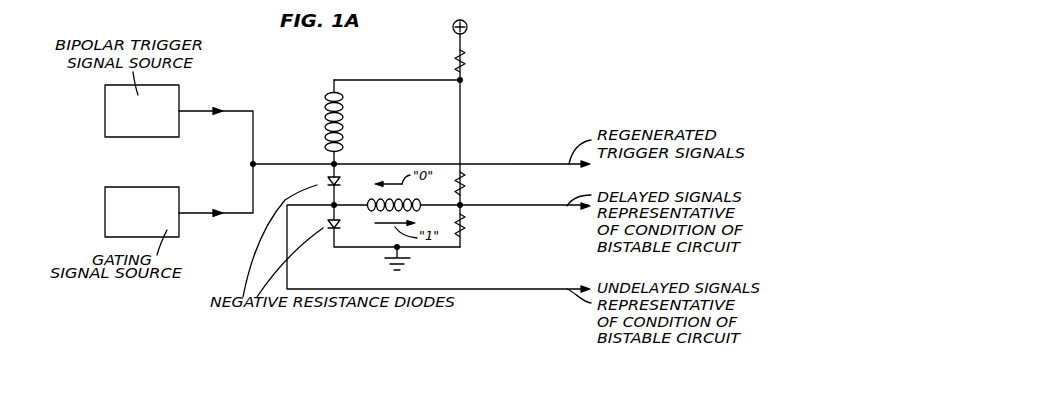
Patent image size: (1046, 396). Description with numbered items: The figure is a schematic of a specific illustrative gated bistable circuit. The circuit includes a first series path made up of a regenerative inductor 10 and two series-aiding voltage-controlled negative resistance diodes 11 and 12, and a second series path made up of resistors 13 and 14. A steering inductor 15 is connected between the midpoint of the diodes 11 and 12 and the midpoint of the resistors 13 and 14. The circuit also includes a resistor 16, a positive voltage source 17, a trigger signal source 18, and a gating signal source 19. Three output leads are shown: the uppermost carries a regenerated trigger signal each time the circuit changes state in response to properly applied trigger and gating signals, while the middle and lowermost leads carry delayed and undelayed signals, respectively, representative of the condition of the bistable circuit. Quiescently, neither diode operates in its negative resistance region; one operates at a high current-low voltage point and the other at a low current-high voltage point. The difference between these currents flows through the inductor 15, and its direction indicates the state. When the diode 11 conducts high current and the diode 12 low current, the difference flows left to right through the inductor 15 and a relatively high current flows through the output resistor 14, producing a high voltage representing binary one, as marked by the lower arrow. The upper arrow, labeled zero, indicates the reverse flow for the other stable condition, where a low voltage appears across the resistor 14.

The regenerative inductor 10 is at (347, 107).
The negative resistance diode 11 is at (323, 183).
The negative resistance diode 12 is at (323, 226).
The resistor 13 is at (470, 182).
The output resistor 14 is at (470, 228).
The steering inductor 15 is at (370, 198).
The resistor 16 is at (470, 62).
The positive voltage source 17 is at (468, 27).
The trigger signal source 18 is at (105, 111).
The gating signal source 19 is at (105, 213).